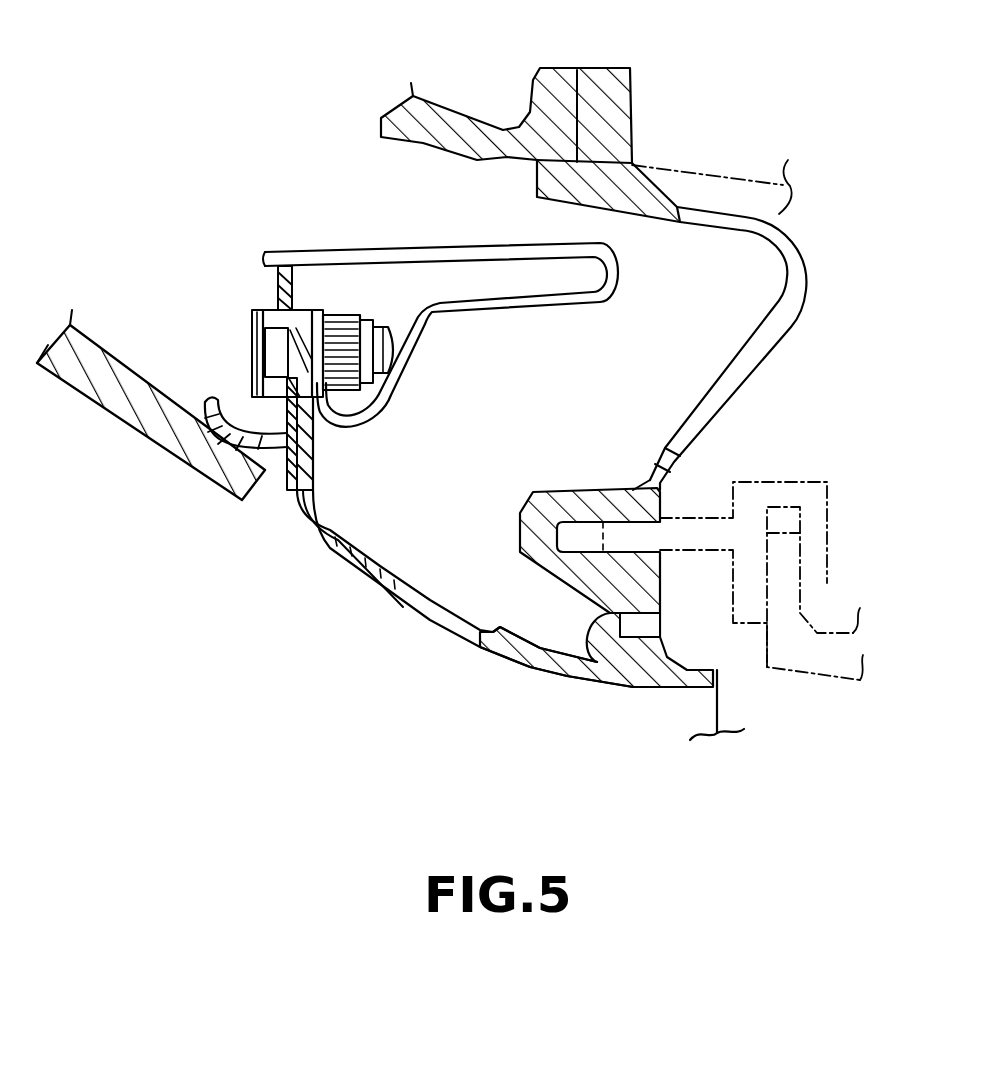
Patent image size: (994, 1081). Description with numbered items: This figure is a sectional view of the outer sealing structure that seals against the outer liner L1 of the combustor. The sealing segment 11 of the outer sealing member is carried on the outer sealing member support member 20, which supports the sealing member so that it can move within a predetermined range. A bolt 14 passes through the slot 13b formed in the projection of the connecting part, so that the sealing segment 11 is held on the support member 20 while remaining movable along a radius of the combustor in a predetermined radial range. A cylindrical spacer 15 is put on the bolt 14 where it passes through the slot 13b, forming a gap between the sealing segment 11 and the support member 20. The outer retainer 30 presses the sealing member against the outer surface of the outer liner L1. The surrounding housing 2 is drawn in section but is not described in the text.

The housing 2 is at (447, 103).
The outer retainer 30 is at (566, 312).
The slot 13b is at (277, 304).
The cylindrical spacer 15 is at (262, 299).
The bolt 14 is at (400, 356).
The sealing segment 11 is at (291, 495).
The outer sealing member support member 20 is at (342, 536).
The outer liner L1 is at (173, 451).